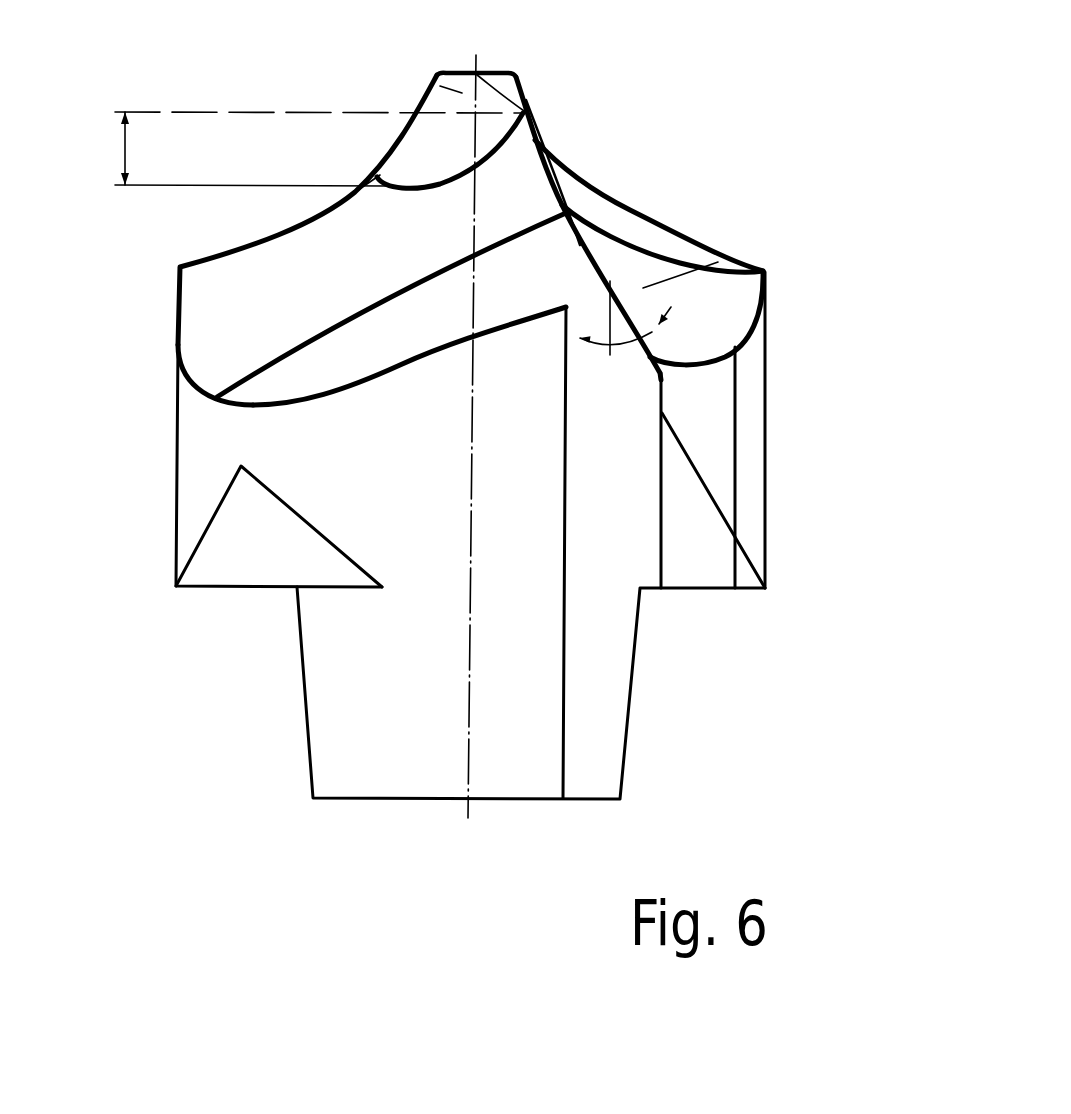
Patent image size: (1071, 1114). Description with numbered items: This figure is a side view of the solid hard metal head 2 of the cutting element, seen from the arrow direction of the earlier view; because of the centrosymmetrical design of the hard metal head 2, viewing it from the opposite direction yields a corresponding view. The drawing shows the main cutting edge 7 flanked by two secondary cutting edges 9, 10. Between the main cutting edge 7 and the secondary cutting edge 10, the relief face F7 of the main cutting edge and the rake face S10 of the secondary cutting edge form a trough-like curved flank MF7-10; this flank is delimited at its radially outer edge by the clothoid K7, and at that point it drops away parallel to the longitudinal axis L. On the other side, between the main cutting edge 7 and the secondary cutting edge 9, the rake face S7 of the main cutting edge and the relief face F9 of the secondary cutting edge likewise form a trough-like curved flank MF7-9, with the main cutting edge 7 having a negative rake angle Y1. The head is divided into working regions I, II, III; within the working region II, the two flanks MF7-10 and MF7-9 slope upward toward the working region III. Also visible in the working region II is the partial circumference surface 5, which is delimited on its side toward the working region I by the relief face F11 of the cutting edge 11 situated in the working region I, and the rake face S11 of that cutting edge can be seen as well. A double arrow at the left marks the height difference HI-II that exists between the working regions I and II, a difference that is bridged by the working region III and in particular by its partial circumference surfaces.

The solid hard metal head 2 is at (653, 130).
The partial circumference surface 5 is at (413, 170).
The main cutting edge 7 is at (598, 250).
The secondary cutting edge 9 is at (694, 247).
The secondary cutting edge 10 is at (218, 252).
The cutting edge 11 is at (497, 88).
The working region I is at (543, 83).
The working region II is at (208, 167).
The working region III is at (363, 133).
The height difference HI-II is at (78, 152).
The rake face of the main cutting edge S7 is at (718, 263).
The rake face of the secondary cutting edge S10 is at (237, 299).
The rake face S11 is at (530, 100).
The relief face of the main cutting edge F7 is at (333, 358).
The relief face of the secondary cutting edge F9 is at (727, 288).
The relief face of the cutting edge F11 is at (460, 92).
The trough-like curved flank MF7-9 is at (697, 315).
The trough-like curved flank MF7-10 is at (258, 327).
The clothoid K7 is at (338, 396).
The negative rake angle Y1 is at (627, 352).
The longitudinal axis L is at (468, 782).